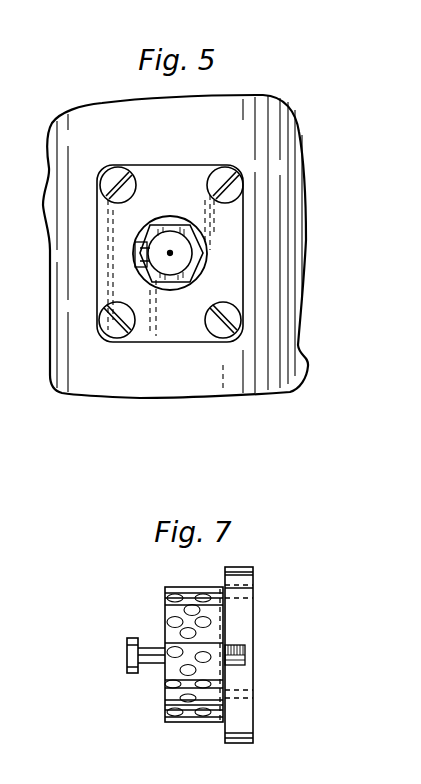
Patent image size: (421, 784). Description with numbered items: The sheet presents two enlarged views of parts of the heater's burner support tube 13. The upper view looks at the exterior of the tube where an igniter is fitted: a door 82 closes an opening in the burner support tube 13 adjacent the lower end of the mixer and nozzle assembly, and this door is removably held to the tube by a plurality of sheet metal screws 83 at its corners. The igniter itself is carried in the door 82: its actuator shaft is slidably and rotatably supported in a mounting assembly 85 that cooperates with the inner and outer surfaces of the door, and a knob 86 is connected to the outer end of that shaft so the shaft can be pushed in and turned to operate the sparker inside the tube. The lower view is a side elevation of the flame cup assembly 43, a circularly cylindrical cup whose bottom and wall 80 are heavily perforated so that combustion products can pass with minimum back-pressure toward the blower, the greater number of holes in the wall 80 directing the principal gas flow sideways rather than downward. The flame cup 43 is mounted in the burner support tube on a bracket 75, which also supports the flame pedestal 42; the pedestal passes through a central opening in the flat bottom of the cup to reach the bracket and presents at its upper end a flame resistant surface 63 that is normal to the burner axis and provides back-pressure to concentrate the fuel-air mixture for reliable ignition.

In FIG. 5, the burner support tube 13 is at (275, 209).
In FIG. 5, the door 82 is at (223, 265).
In FIG. 5, the sheet metal screws 83 is at (220, 342).
In FIG. 5, the mounting assembly 85 is at (152, 225).
In FIG. 5, the knob 86 is at (170, 235).
In FIG. 7, the flame cup assembly 43 is at (172, 578).
In FIG. 7, the bracket 75 is at (240, 618).
In FIG. 7, the flame resistant surface 63 is at (127, 645).
In FIG. 7, the flame pedestal 42 is at (150, 673).
In FIG. 7, the wall 80 is at (177, 720).